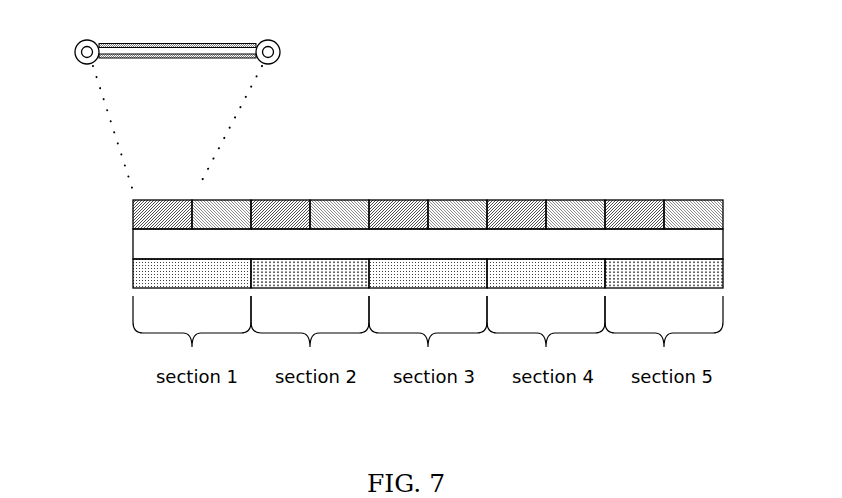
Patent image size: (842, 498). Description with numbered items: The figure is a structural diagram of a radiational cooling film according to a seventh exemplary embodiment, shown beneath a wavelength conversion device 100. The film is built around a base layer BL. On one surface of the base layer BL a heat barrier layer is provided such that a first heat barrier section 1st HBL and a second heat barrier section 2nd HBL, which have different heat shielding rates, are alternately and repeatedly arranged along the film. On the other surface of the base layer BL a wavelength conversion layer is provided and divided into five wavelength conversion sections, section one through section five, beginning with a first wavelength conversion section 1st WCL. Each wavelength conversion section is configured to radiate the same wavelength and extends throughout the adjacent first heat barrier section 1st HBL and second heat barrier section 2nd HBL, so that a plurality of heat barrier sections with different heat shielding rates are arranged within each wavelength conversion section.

The wavelength conversion device 100 is at (192, 43).
The first heat barrier section 1st HBL is at (133, 218).
The second heat barrier section 2nd HBL is at (220, 199).
The base layer BL is at (723, 247).
The first wavelength conversion section 1st WCL is at (133, 278).